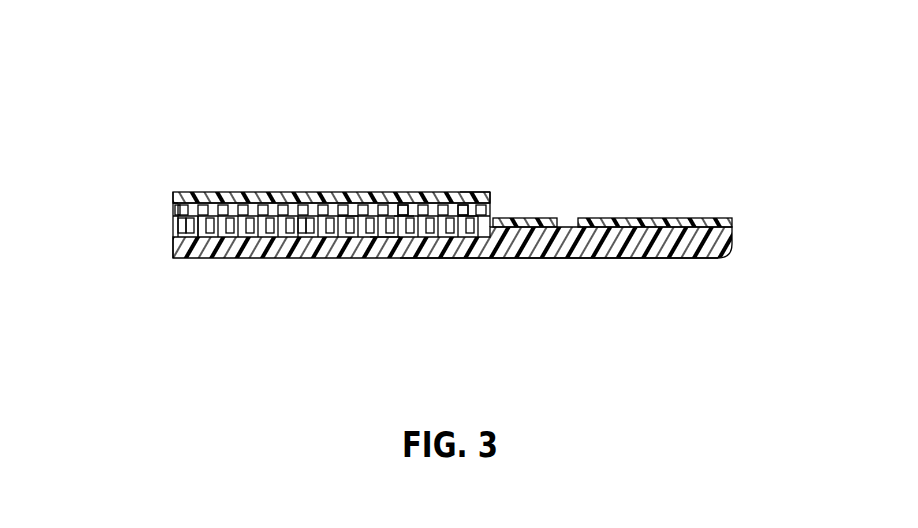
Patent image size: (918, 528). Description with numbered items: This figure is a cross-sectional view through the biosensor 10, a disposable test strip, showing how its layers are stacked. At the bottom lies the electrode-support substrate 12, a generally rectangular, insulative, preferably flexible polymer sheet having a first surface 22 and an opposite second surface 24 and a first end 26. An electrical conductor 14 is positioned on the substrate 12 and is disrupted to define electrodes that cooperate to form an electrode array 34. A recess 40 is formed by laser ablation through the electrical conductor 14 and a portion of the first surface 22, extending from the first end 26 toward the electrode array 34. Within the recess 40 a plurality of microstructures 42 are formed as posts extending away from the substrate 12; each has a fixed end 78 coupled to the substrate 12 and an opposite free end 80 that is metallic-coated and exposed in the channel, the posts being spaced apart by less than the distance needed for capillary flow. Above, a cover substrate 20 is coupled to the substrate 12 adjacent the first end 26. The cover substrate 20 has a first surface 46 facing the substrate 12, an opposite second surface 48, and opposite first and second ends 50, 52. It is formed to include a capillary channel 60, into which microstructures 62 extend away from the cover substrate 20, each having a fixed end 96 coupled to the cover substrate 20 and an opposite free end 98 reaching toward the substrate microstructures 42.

The biosensor 10 is at (650, 152).
The electrode-support substrate 12 is at (404, 294).
The electrical conductor 14 is at (546, 216).
The cover substrate 20 is at (377, 120).
The first surface 22 is at (706, 218).
The second surface 24 is at (575, 259).
The first end 26 is at (172, 247).
The electrode array 34 is at (382, 242).
The recess 40 is at (257, 198).
The microstructures 42 is at (252, 234).
The first surface 46 is at (465, 227).
The second surface 48 is at (477, 192).
The first end 50 is at (177, 207).
The second end 52 is at (490, 199).
The capillary channel 60 is at (171, 205).
The microstructures 62 is at (462, 213).
The fixed end 78 is at (193, 240).
The free end 80 is at (212, 208).
The fixed end 96 is at (350, 227).
The free end 98 is at (400, 226).